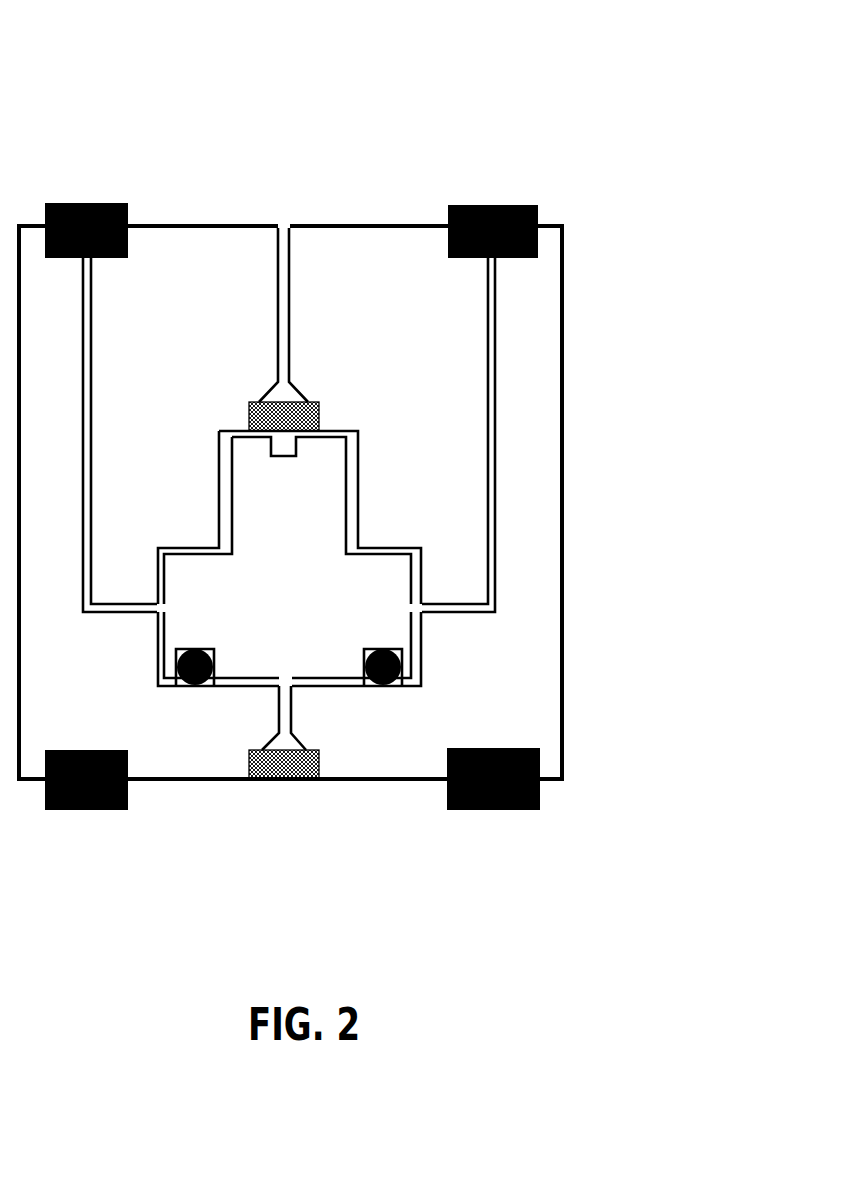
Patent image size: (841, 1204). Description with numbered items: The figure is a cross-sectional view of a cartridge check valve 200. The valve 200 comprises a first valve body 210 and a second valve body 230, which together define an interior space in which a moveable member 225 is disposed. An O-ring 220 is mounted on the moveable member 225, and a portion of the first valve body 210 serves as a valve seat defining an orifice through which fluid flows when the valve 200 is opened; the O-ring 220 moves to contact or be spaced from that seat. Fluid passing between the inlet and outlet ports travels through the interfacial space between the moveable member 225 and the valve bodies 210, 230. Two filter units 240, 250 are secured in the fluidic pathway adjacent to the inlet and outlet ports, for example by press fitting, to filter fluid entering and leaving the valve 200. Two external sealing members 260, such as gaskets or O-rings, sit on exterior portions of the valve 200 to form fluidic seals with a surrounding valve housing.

The cartridge check valve 200 is at (134, 120).
The first valve body 210 is at (130, 717).
The O-ring 220 is at (399, 692).
The moveable member 225 is at (318, 585).
The second valve body 230 is at (432, 355).
The filter unit 240 is at (267, 782).
The filter unit 250 is at (247, 415).
The external sealing member 260 is at (492, 205).